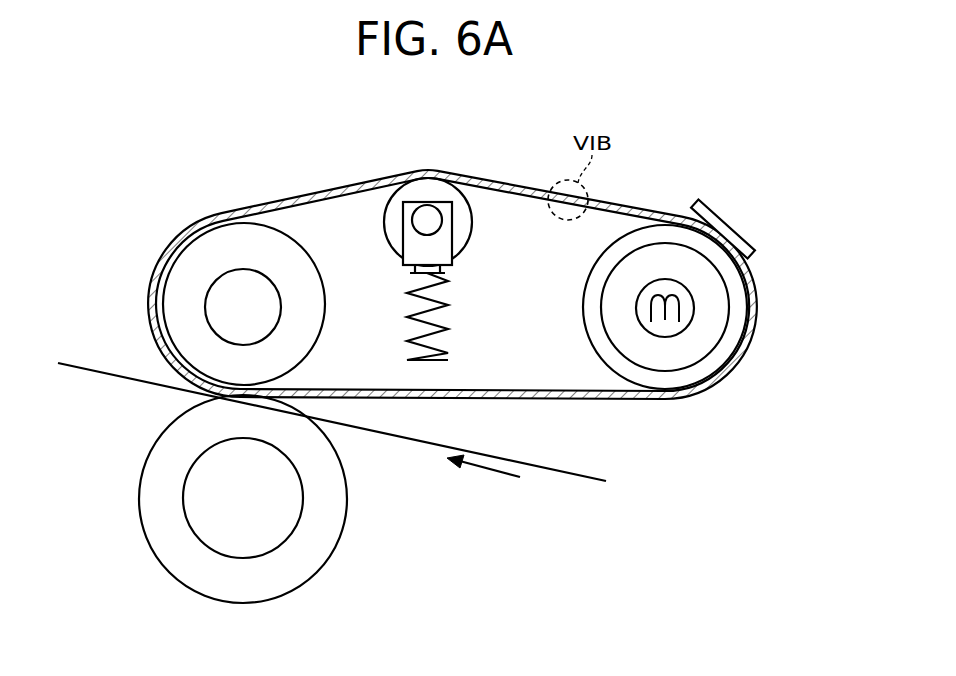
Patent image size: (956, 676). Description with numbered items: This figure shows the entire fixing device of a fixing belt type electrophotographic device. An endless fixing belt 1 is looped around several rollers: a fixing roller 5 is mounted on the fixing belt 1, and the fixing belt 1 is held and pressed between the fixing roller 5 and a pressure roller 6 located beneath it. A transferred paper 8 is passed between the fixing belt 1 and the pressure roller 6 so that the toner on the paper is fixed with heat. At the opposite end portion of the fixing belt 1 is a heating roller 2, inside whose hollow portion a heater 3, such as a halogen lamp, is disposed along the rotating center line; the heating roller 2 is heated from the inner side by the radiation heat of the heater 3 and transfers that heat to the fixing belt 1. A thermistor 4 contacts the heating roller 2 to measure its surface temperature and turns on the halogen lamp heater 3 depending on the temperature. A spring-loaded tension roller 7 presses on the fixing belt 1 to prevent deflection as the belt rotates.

The fixing belt 1 is at (492, 180).
The heating roller 2 is at (738, 322).
The heater 3 is at (640, 311).
The thermistor 4 is at (737, 232).
The fixing roller 5 is at (166, 306).
The pressure roller 6 is at (146, 497).
The tension roller 7 is at (466, 222).
The transferred paper 8 is at (555, 470).